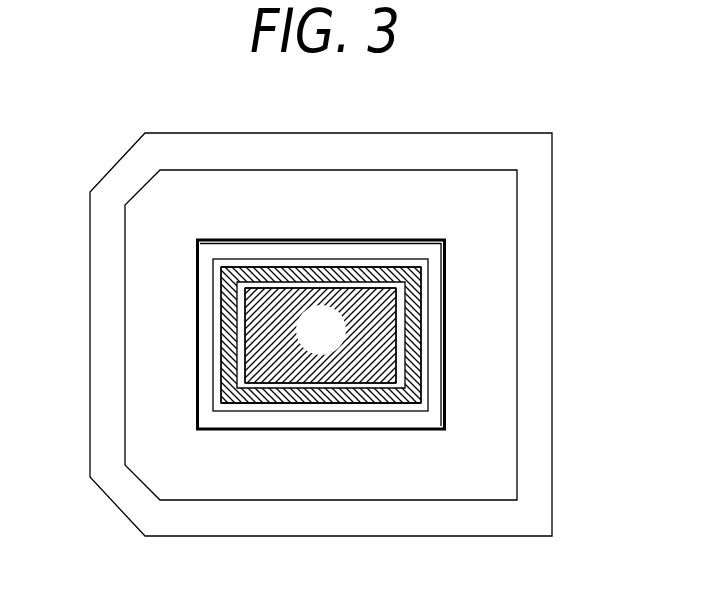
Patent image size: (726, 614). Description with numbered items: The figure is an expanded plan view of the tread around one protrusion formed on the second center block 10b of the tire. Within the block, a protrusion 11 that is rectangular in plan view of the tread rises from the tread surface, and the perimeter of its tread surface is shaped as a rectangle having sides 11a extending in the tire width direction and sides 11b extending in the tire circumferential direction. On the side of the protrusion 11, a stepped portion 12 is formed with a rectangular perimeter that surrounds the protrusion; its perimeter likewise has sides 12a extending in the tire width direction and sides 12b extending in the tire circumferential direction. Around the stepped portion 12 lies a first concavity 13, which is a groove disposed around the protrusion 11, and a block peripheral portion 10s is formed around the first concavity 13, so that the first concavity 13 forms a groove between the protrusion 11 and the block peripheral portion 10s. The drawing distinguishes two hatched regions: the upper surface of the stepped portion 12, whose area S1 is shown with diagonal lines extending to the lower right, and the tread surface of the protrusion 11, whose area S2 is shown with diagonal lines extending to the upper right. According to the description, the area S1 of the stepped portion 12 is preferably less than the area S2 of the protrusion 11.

The second center block 10b is at (532, 112).
The block peripheral portion 10s is at (443, 190).
The protrusion 11 is at (393, 340).
The sides extending in the tire width direction 11a is at (277, 290).
The sides extending in the tire circumferential direction 11b is at (245, 312).
The stepped portion 12 is at (412, 312).
The sides extending in the tire width direction 12a is at (363, 266).
The sides extending in the tire circumferential direction 12b is at (221, 358).
The first concavity 13 is at (435, 273).
The area of the upper surface of the stepped portion S1 is at (325, 397).
The area of the tread surface of the protrusion S2 is at (335, 345).